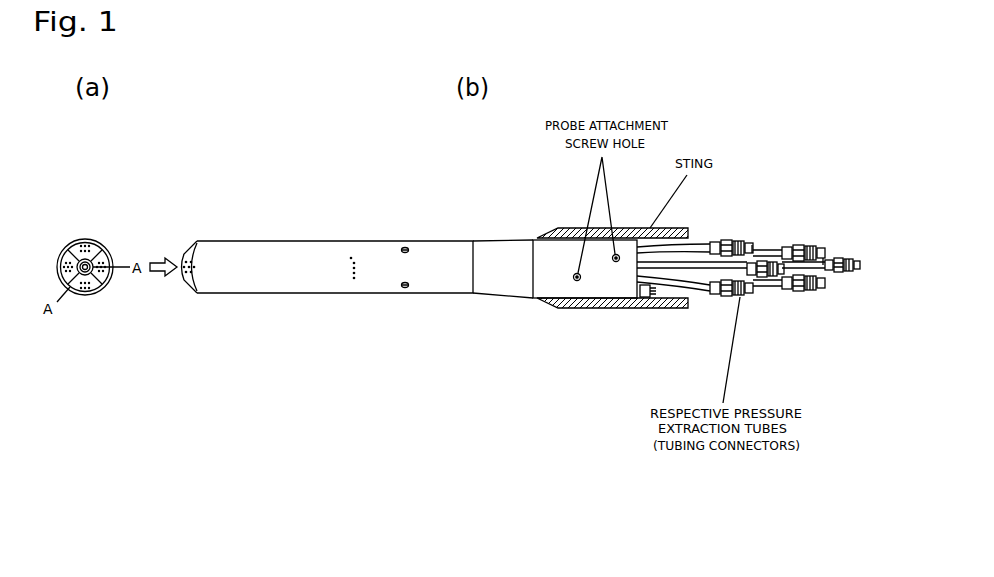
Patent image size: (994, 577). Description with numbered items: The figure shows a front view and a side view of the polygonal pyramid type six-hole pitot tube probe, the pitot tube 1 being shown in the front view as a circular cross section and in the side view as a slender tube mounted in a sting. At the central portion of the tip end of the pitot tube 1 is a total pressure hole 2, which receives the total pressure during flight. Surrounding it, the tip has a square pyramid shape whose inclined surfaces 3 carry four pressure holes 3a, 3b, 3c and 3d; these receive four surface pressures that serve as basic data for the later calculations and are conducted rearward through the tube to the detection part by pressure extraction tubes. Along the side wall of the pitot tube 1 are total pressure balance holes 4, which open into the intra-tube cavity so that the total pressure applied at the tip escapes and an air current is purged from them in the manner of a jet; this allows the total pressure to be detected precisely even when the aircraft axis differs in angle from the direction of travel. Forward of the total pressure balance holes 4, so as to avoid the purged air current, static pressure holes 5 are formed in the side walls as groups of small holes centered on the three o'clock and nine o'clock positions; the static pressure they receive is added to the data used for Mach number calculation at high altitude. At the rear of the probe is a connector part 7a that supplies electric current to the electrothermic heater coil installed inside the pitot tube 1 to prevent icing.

The pitot tube 1 is at (400, 441).
The total pressure hole 2 is at (177, 273).
The square pyramid inclined surfaces 3 is at (82, 253).
The pressure hole 3a is at (101, 249).
The pressure hole 3b is at (178, 263).
The pressure hole 3c is at (83, 287).
The pressure hole 3d is at (67, 253).
The total pressure balance holes 4 is at (410, 248).
The static pressure holes 5 is at (350, 258).
The connector part 7a is at (675, 360).